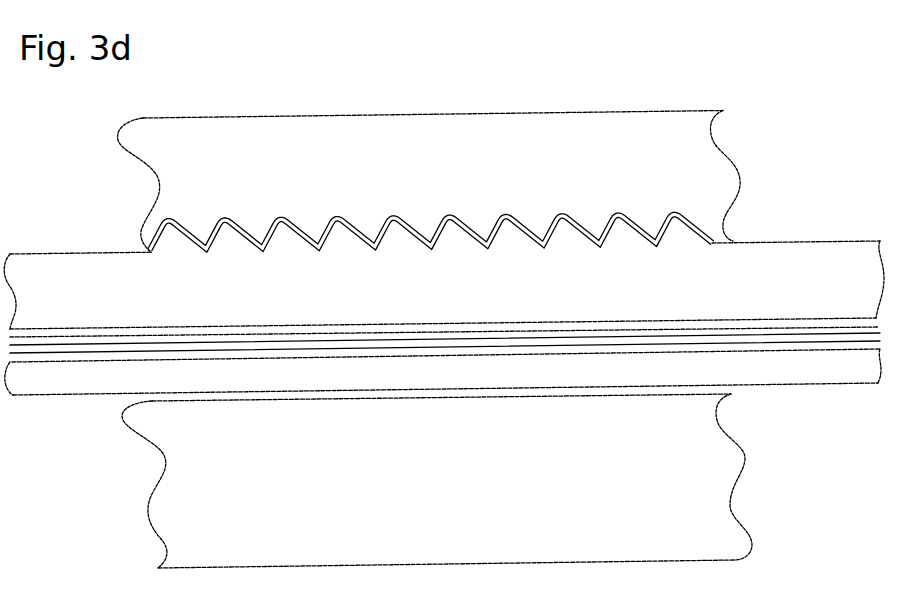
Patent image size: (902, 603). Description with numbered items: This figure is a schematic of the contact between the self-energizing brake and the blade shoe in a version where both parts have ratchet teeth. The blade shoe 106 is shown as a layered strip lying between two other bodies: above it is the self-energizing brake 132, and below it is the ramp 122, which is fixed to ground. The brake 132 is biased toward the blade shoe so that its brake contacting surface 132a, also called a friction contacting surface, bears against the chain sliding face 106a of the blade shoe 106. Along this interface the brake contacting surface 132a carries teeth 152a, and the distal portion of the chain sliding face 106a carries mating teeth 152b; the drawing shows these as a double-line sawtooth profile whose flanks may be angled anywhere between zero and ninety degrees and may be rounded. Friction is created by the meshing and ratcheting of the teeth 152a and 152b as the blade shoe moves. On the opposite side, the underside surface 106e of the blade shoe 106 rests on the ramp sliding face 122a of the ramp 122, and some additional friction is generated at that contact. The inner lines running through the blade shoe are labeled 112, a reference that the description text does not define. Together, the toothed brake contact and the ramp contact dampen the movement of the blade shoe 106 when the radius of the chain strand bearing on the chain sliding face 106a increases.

The blade shoe 106 is at (444, 313).
The chain sliding face 106a is at (494, 229).
The underside surface 106e is at (788, 382).
The core layer 112 is at (107, 332).
The ramp 122 is at (409, 481).
The ramp sliding face 122a is at (243, 403).
The self-energizing brake 132 is at (360, 170).
The brake contacting surface 132a is at (430, 230).
The teeth 152a is at (240, 226).
The teeth 152b is at (296, 231).